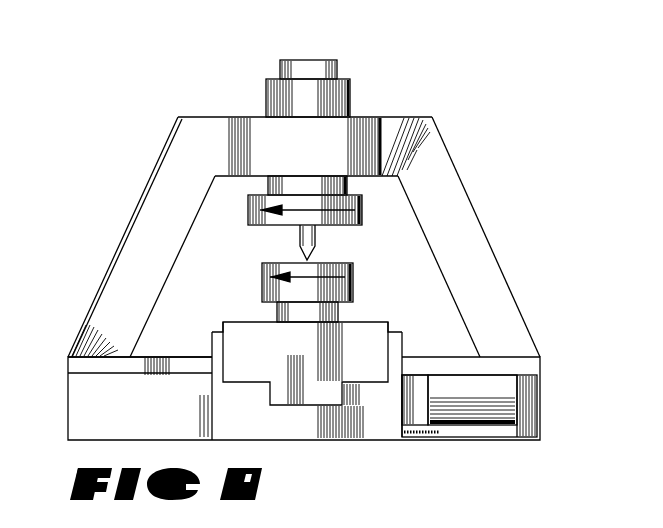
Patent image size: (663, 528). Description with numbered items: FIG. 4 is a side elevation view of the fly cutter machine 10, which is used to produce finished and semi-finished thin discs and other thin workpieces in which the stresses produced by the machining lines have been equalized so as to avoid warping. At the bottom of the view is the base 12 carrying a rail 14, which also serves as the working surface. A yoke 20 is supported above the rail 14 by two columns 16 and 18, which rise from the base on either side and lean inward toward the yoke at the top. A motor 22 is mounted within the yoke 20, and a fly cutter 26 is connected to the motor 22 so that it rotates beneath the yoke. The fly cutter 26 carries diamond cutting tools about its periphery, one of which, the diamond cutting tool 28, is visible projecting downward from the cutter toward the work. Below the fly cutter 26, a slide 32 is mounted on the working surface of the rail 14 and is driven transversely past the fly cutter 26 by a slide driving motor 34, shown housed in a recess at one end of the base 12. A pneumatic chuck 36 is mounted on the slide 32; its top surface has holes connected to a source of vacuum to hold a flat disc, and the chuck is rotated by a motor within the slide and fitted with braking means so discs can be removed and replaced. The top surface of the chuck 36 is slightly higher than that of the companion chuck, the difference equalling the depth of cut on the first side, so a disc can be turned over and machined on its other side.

The fly cutter machine 10 is at (475, 153).
The base 12 is at (220, 408).
The rail 14 is at (152, 356).
The column 16 is at (487, 238).
The column 18 is at (148, 177).
The yoke 20 is at (410, 117).
The motor 22 is at (350, 82).
The fly cutter 26 is at (362, 221).
The diamond cutting tool 28 is at (300, 251).
The slide 32 is at (357, 322).
The slide driving motor 34 is at (510, 402).
The pneumatic chuck 36 is at (262, 288).